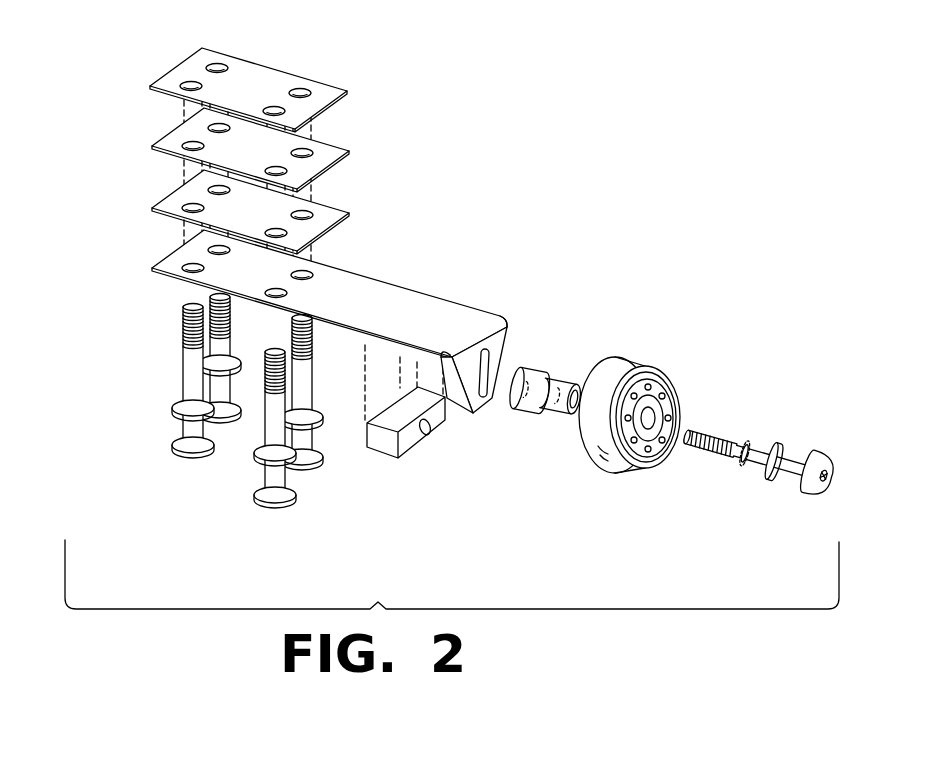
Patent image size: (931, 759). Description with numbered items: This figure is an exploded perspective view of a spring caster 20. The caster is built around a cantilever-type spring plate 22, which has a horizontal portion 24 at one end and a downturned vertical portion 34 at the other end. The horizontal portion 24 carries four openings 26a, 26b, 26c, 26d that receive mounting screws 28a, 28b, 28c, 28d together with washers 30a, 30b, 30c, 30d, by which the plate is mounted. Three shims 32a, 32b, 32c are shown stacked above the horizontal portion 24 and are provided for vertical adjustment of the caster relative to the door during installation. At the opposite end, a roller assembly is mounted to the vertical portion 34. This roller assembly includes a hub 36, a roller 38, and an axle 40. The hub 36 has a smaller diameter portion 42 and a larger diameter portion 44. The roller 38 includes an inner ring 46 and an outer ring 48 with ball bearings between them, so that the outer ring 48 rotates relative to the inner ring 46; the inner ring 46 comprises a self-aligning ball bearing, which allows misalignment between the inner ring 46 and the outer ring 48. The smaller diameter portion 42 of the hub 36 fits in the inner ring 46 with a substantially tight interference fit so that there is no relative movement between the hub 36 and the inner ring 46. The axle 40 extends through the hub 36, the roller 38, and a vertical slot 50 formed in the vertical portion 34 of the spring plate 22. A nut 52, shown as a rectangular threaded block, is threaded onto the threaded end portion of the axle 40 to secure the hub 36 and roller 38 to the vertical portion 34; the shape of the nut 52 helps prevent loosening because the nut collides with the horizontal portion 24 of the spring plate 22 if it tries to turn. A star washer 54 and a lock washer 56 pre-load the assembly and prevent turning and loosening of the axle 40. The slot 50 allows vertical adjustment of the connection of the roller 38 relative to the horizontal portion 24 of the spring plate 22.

The spring caster 20 is at (427, 158).
The spring plate 22 is at (478, 339).
The horizontal portion 24 is at (380, 290).
The opening 26a is at (214, 249).
The opening 26b is at (188, 267).
The opening 26c is at (306, 272).
The opening 26d is at (284, 292).
The mounting screw 28a is at (210, 300).
The mounting screw 28b is at (182, 340).
The mounting screw 28c is at (306, 362).
The mounting screw 28d is at (283, 507).
The washer 30a is at (245, 395).
The washer 30b is at (170, 412).
The washer 30c is at (322, 432).
The washer 30d is at (258, 465).
The shim 32a is at (185, 67).
The shim 32b is at (172, 133).
The shim 32c is at (172, 196).
The vertical portion 34 is at (508, 334).
The hub 36 is at (560, 396).
The roller 38 is at (615, 406).
The axle 40 is at (771, 413).
The smaller diameter portion 42 is at (576, 373).
The larger diameter portion 44 is at (528, 374).
The inner ring 46 is at (635, 445).
The outer ring 48 is at (600, 448).
The vertical slot 50 is at (486, 398).
The nut 52 is at (380, 443).
The star washer 54 is at (745, 440).
The lock washer 56 is at (800, 456).